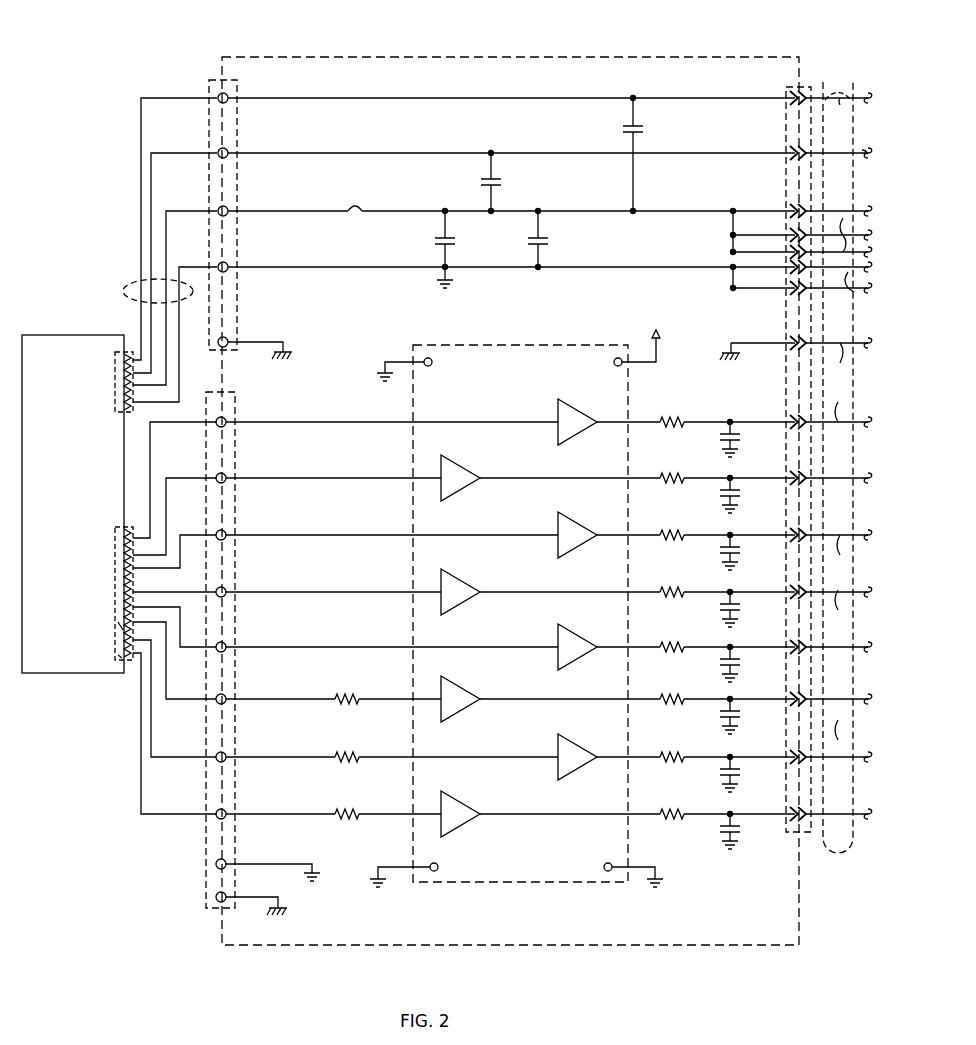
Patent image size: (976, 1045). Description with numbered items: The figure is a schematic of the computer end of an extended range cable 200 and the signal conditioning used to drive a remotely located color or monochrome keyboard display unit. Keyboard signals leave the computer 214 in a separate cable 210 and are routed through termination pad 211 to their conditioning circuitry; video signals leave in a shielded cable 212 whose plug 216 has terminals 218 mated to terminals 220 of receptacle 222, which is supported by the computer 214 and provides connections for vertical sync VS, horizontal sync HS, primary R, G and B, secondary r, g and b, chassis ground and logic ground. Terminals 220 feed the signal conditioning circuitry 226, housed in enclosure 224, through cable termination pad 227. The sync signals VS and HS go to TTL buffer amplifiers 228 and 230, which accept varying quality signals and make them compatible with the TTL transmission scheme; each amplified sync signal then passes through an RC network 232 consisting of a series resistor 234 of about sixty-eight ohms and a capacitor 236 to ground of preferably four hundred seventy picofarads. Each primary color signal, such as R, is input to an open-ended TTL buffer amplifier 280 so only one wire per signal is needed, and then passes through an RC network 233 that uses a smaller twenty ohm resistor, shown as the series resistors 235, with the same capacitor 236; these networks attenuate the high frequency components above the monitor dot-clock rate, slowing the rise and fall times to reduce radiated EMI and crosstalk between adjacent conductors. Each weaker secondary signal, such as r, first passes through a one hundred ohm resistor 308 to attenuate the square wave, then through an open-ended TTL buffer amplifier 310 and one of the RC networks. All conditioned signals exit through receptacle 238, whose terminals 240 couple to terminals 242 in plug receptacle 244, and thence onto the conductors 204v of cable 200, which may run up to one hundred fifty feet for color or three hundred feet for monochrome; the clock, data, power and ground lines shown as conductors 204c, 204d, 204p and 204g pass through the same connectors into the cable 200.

The extended range cable 200 is at (850, 52).
The clock conductor 204c is at (849, 111).
The data conductor 204d is at (850, 145).
The power conductor 204p is at (850, 222).
The ground conductor 204g is at (850, 288).
The conductors 204v is at (838, 541).
The keyboard cable 210 is at (120, 277).
The termination pad 211 is at (209, 78).
The shielded cable 212 is at (132, 513).
The computer 214 is at (80, 335).
The plug 216 is at (130, 668).
The terminals 218 is at (124, 548).
The terminals 220 is at (115, 657).
The receptacle 222 is at (105, 625).
The enclosure 224 is at (376, 56).
The signal conditioning circuitry 226 is at (511, 216).
The cable termination pad 227 is at (205, 868).
The TTL buffer amplifier 228 is at (570, 402).
The TTL buffer amplifier 230 is at (460, 476).
The RC network 232 is at (510, 628).
The RC network 233 is at (715, 520).
The series resistor 234 is at (676, 417).
The series resistor 235 is at (673, 590).
The capacitor 236 is at (722, 444).
The receptacle 238 is at (786, 86).
The terminals 240 is at (792, 100).
The terminals 242 is at (806, 756).
The plug receptacle 244 is at (833, 84).
The TTL buffer amplifier 280 is at (578, 526).
The resistor 308 is at (348, 699).
The TTL buffer amplifier 310 is at (460, 696).